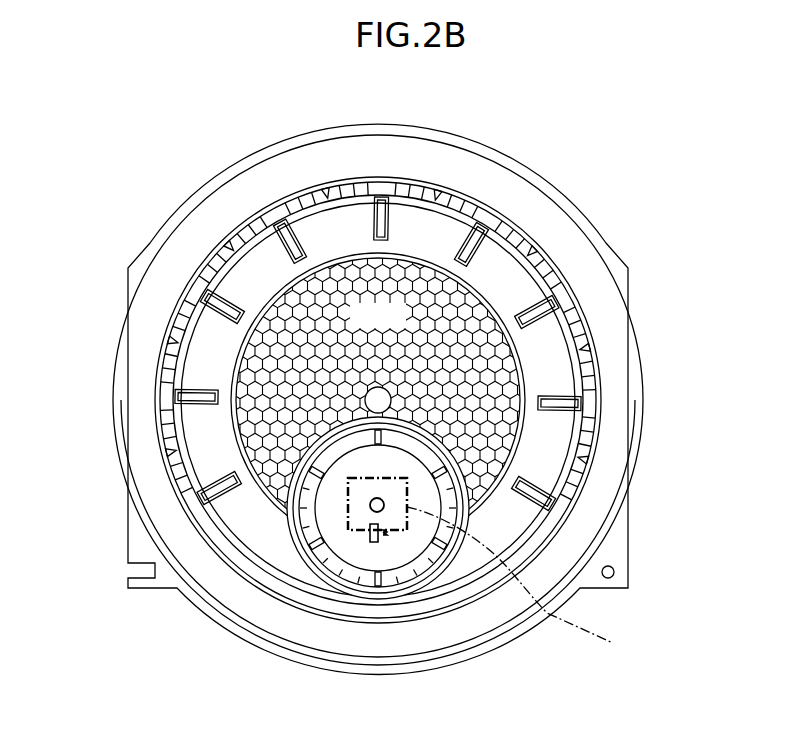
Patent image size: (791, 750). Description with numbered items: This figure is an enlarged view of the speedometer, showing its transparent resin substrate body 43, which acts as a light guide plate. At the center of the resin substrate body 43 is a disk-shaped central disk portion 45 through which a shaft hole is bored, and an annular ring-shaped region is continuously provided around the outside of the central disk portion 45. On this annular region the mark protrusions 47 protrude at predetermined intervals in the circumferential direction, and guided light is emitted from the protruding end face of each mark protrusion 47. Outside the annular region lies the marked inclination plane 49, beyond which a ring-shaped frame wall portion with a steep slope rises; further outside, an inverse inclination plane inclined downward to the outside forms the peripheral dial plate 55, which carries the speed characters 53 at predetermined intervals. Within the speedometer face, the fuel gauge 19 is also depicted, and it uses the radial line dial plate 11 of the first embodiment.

The resin substrate body 43 is at (213, 168).
The central disk portion 45 is at (190, 423).
The mark protrusion 47 is at (384, 212).
The marked inclination plane 49 is at (583, 330).
The speed characters 53 is at (501, 180).
The peripheral dial plate 55 is at (577, 213).
The radial line dial plate 11 is at (352, 547).
The fuel gauge 19 is at (430, 492).